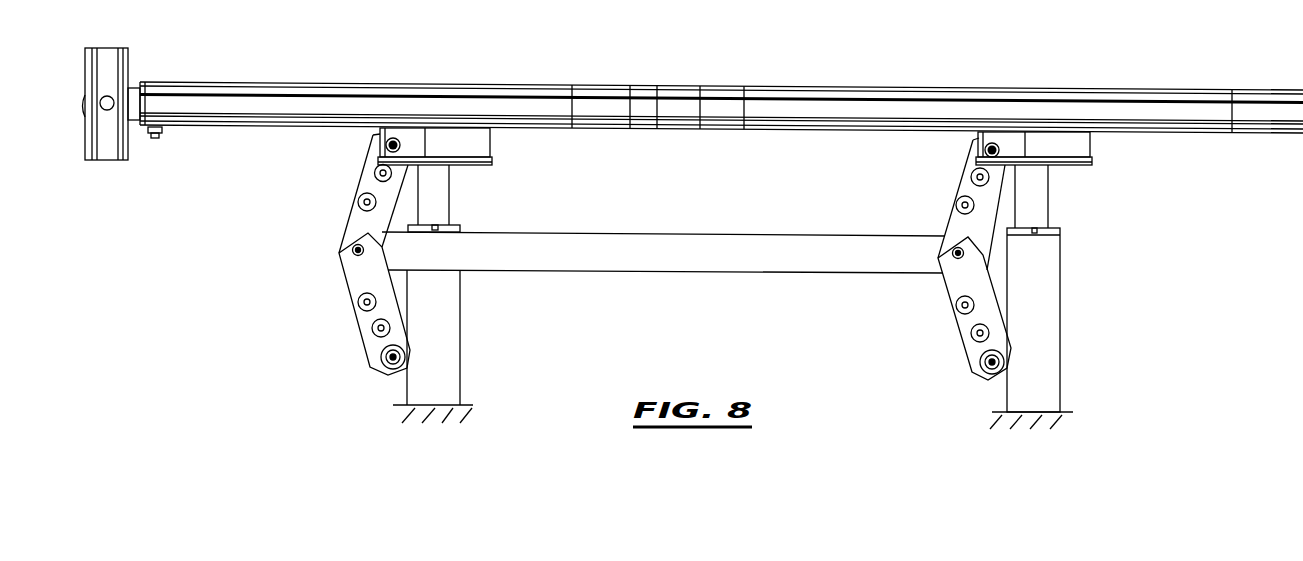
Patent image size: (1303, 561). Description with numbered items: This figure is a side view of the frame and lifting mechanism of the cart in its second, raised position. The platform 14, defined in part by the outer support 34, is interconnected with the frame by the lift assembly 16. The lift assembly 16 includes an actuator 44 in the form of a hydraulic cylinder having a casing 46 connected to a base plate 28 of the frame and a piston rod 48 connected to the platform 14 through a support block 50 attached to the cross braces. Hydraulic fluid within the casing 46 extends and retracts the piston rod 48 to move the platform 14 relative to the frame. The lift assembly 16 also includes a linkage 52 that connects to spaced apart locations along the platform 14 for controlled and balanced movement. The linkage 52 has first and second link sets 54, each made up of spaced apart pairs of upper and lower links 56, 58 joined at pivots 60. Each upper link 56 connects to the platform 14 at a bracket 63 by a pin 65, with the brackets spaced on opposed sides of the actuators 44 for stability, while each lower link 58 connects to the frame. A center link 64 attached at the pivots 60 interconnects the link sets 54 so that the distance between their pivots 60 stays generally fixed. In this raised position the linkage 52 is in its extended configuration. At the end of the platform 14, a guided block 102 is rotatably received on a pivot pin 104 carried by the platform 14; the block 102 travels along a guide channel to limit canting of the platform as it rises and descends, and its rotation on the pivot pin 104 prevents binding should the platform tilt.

The platform 14 is at (1187, 88).
The lift assembly 16 is at (272, 218).
The base plate 28 is at (416, 416).
The outer support 34 is at (762, 103).
The actuator 44 is at (474, 438).
The casing 46 is at (452, 367).
The piston rod 48 is at (442, 193).
The support block 50 is at (481, 144).
The linkage 52 is at (596, 315).
The link set 54 is at (354, 324).
The upper link 56 is at (352, 213).
The lower link 58 is at (348, 270).
The pivot 60 is at (353, 249).
The bracket 63 is at (403, 135).
The center link 64 is at (690, 262).
The pin 65 is at (391, 141).
The block 102 is at (107, 51).
The pivot pin 104 is at (103, 98).